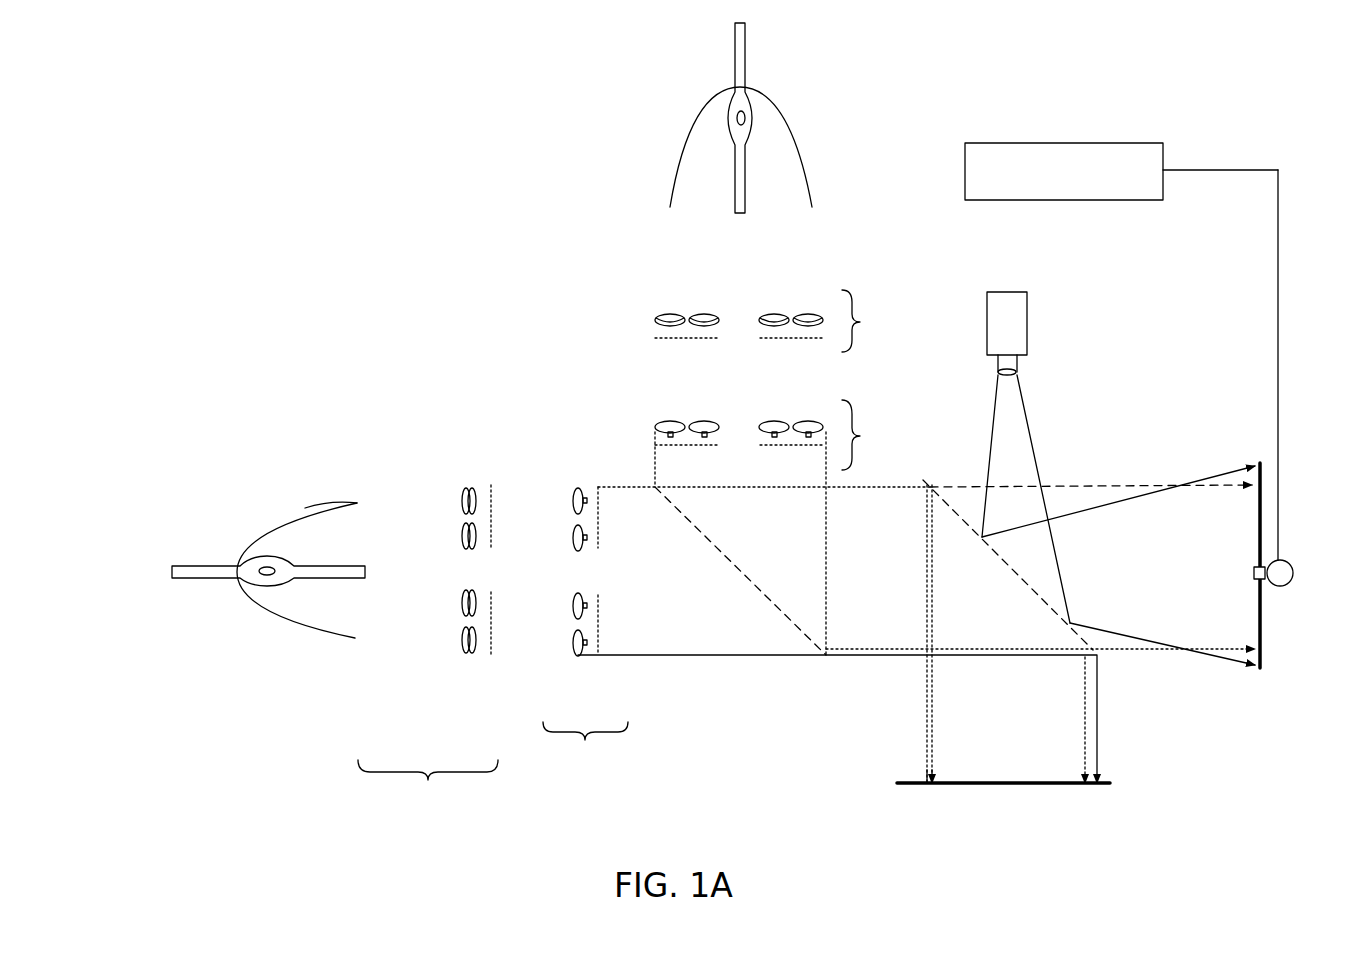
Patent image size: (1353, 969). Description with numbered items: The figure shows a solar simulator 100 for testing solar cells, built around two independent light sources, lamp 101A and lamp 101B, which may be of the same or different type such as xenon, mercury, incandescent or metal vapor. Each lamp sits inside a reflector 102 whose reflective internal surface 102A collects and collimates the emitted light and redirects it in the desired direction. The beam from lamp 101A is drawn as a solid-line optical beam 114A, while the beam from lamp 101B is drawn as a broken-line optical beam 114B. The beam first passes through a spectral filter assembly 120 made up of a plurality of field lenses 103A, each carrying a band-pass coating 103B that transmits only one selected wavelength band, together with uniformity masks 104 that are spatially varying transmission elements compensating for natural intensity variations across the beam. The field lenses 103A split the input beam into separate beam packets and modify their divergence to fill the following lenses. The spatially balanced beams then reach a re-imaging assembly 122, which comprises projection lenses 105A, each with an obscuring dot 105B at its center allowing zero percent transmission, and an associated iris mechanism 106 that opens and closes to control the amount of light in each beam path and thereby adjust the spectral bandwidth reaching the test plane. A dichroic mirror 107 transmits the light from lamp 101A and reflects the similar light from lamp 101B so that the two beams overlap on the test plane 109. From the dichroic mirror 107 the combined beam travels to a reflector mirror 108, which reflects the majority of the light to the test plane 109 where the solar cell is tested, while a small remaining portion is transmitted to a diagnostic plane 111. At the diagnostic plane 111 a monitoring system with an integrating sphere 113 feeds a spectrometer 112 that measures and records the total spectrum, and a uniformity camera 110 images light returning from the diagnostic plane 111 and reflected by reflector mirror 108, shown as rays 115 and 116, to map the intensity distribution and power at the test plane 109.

The solar simulator 100 is at (368, 190).
The lamp 101A is at (263, 548).
The lamp 101B is at (732, 128).
The reflector 102 is at (267, 622).
The reflective internal surface 102A is at (340, 506).
The field lens 103A is at (470, 658).
The band-pass coating 103B is at (465, 645).
The uniformity mask 104 is at (491, 660).
The projection lens 105A is at (578, 658).
The obscuring dot 105B is at (580, 488).
The iris mechanism 106 is at (600, 612).
The dichroic mirror 107 is at (690, 517).
The reflector mirror 108 is at (940, 490).
The test plane 109 is at (1005, 787).
The uniformity camera 110 is at (1032, 320).
The diagnostic plane 111 is at (1255, 630).
The spectrometer 112 is at (1065, 143).
The integrating sphere 113 is at (1284, 590).
The optical beam 114A is at (630, 490).
The optical beam 114B is at (878, 490).
The reflected light 115 is at (1143, 495).
The reflected light 116 is at (1138, 655).
The spectral filter assembly 120 is at (636, 554).
The re-imaging assembly 122 is at (727, 588).